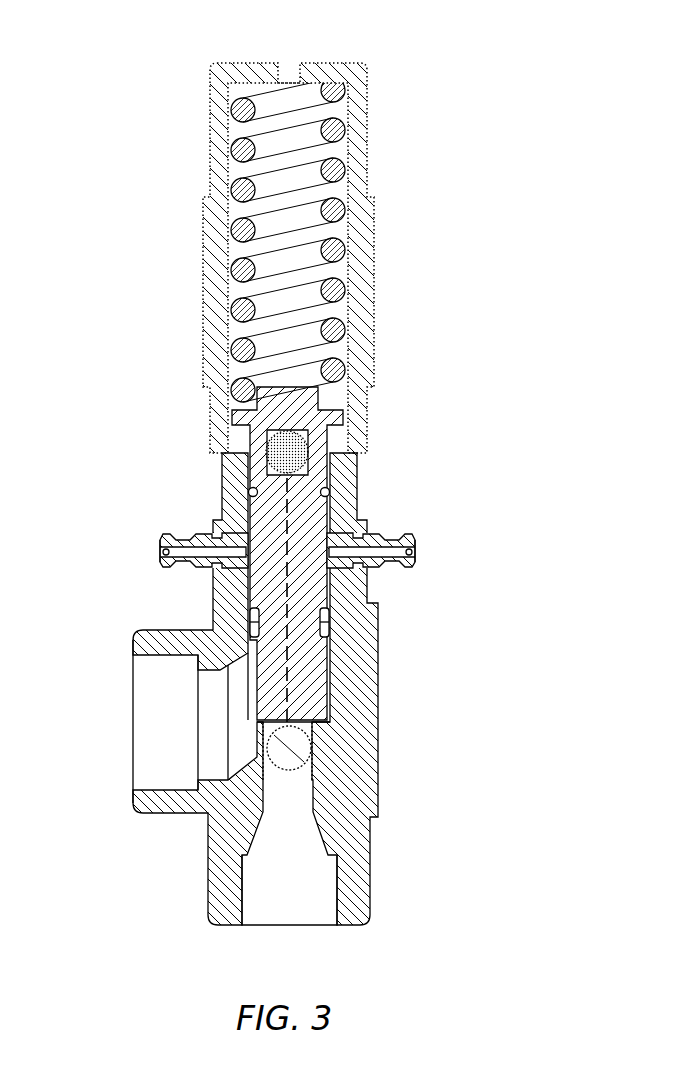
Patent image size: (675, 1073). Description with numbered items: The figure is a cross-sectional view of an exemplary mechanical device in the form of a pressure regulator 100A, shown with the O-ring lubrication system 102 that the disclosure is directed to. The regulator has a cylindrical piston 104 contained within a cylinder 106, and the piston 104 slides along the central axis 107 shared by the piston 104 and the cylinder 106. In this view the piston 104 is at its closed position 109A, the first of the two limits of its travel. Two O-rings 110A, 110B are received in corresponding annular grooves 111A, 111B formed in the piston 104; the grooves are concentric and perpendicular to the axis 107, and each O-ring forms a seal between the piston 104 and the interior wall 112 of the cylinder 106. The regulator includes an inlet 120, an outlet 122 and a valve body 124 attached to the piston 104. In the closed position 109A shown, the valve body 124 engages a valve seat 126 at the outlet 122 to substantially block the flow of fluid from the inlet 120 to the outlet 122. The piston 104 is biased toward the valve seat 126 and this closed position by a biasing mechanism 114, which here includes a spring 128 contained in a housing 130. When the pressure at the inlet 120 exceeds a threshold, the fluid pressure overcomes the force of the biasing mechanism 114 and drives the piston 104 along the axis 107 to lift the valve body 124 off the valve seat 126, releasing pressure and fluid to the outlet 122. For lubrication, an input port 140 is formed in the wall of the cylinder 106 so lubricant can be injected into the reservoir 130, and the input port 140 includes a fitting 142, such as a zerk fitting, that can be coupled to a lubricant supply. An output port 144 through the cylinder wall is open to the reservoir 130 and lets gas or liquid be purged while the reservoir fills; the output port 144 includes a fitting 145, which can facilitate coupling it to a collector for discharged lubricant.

The pressure regulator 100A is at (145, 52).
The O-ring lubrication system 102 is at (414, 506).
The piston 104 is at (322, 716).
The cylinder 106 is at (228, 465).
The central axis 107 is at (288, 605).
The closed position 109A is at (232, 707).
The O-ring 110A is at (328, 492).
The O-ring 110B is at (327, 628).
The annular groove 111A is at (250, 492).
The annular groove 111B is at (250, 616).
The interior wall 112 is at (258, 654).
The biasing mechanism 114 is at (360, 135).
The inlet 120 is at (135, 700).
The outlet 122 is at (296, 915).
The valve body 124 is at (302, 743).
The valve seat 126 is at (270, 752).
The spring 128 is at (240, 188).
The housing 130 is at (364, 272).
The input port 140 is at (336, 553).
The fitting 142 is at (405, 558).
The output port 144 is at (235, 556).
The fitting 145 is at (172, 546).